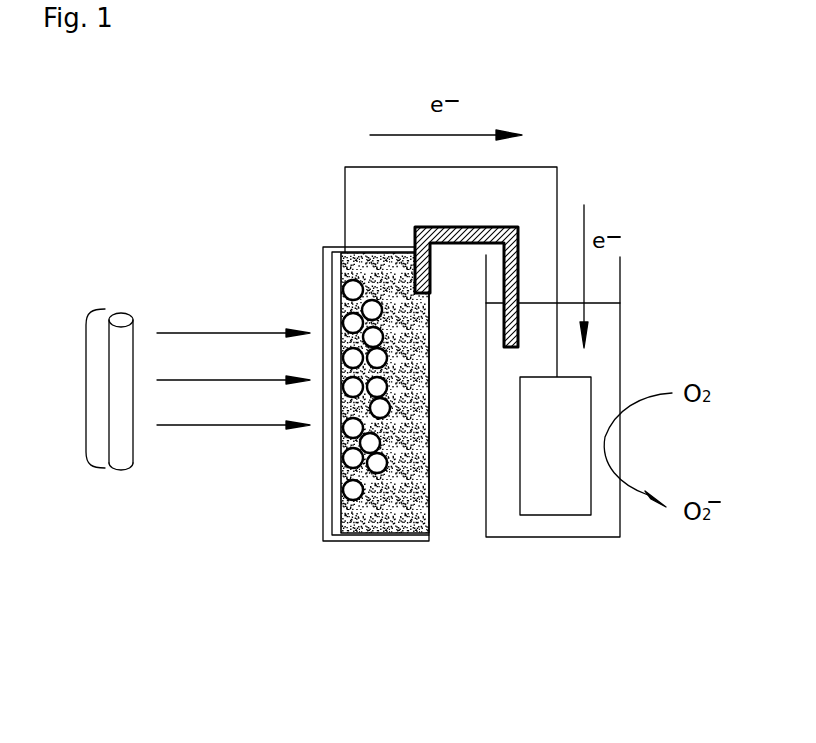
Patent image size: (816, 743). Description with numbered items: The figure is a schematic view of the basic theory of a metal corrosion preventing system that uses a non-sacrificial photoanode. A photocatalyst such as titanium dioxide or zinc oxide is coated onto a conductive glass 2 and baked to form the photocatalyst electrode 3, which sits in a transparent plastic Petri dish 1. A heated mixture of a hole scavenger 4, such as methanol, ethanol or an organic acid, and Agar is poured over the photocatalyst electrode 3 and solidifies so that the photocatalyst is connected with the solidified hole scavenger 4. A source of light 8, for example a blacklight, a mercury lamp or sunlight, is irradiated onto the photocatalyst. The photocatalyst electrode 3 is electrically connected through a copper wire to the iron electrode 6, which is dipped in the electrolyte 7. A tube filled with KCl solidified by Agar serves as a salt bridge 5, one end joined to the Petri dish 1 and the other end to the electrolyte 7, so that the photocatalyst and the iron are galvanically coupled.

The transparent plastic Petri dish 1 is at (325, 482).
The conductive glass 2 is at (337, 532).
The photocatalyst electrode 3 is at (353, 492).
The hole scavenger 4 is at (405, 510).
The salt bridge 5 is at (415, 232).
The iron electrode 6 is at (575, 483).
The electrolyte 7 is at (553, 528).
The source of light 8 is at (122, 453).